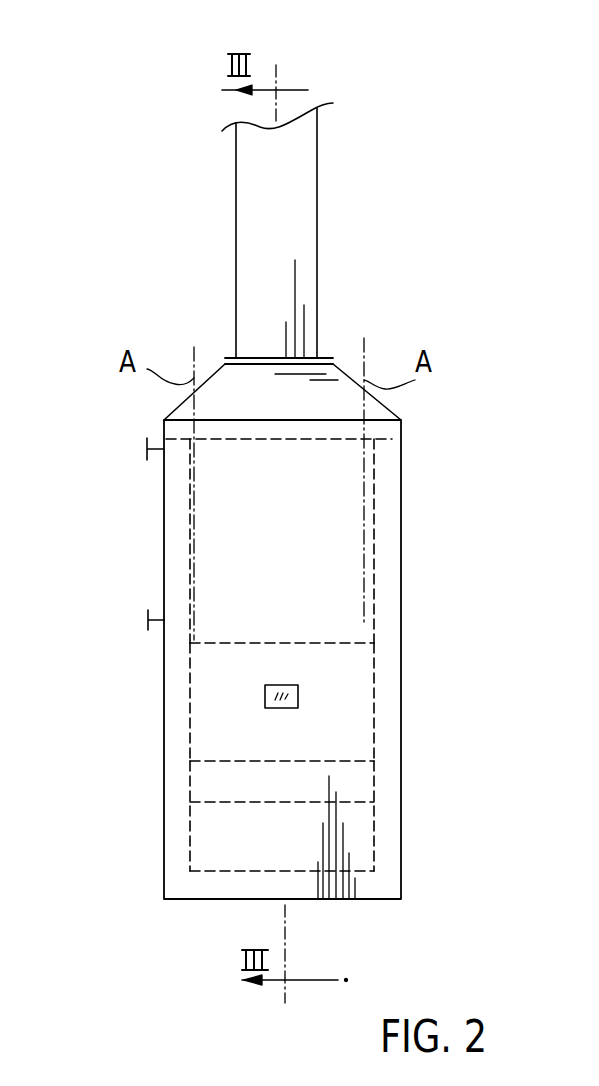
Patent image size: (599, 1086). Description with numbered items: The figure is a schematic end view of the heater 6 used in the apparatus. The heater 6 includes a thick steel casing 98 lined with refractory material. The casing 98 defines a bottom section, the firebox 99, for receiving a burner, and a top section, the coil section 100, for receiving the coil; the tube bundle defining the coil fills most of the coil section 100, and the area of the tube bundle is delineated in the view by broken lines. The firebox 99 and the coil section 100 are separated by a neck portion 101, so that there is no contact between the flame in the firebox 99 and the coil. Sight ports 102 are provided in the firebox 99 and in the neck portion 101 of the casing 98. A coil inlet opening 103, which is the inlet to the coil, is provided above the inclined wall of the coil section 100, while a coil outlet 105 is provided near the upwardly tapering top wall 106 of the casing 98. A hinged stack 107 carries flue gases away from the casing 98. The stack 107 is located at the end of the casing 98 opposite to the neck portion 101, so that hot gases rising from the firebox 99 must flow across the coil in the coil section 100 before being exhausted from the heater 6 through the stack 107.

The heater 6 is at (393, 342).
The casing 98 is at (164, 588).
The firebox 99 is at (215, 838).
The coil section 100 is at (212, 540).
The neck portion 101 is at (207, 714).
The sight ports 102 is at (290, 702).
The coil inlet opening 103 is at (160, 626).
The coil outlet 105 is at (158, 446).
The top wall 106 is at (285, 409).
The stack 107 is at (293, 244).